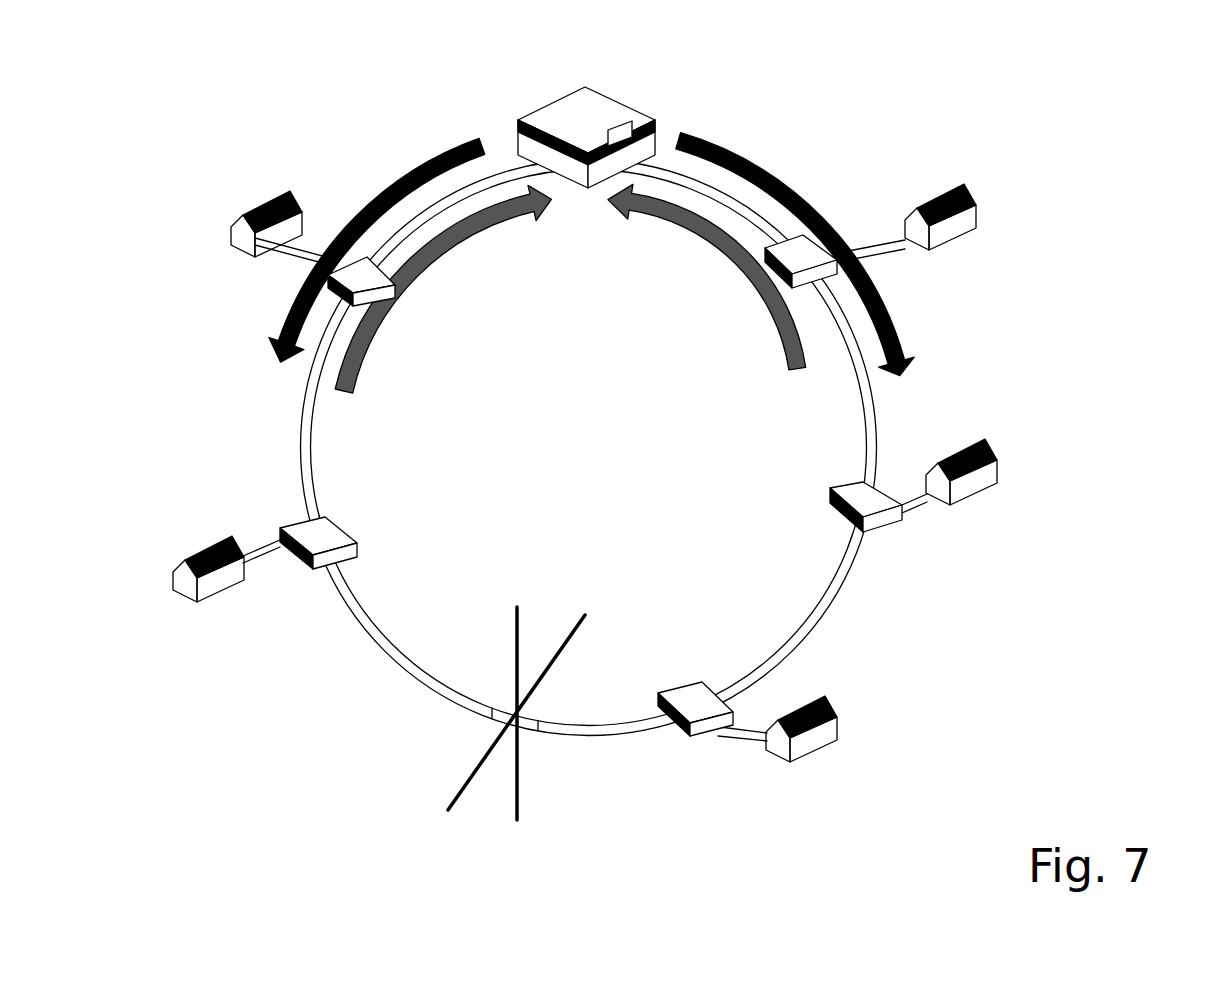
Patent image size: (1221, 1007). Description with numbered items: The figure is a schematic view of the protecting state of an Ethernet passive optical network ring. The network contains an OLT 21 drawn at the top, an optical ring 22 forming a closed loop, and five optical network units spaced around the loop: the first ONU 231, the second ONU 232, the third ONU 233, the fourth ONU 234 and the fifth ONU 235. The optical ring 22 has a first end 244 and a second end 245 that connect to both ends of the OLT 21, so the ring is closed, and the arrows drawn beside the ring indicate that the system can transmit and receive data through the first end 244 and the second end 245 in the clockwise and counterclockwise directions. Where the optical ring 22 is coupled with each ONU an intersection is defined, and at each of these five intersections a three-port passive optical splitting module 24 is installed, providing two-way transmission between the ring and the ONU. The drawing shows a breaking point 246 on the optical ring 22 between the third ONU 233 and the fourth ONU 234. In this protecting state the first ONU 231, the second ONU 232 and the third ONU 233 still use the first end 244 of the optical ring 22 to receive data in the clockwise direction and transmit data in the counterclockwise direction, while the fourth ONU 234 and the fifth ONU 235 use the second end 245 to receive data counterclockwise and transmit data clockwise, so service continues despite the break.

The OLT 21 is at (630, 115).
The optical ring 22 is at (883, 452).
The three-port passive optical splitting module 24 is at (883, 532).
The first ONU 231 is at (964, 187).
The second ONU 232 is at (992, 449).
The third ONU 233 is at (825, 755).
The fourth ONU 234 is at (183, 602).
The fifth ONU 235 is at (290, 192).
The first end 244 is at (653, 146).
The second end 245 is at (498, 156).
The breaking point 246 is at (460, 736).